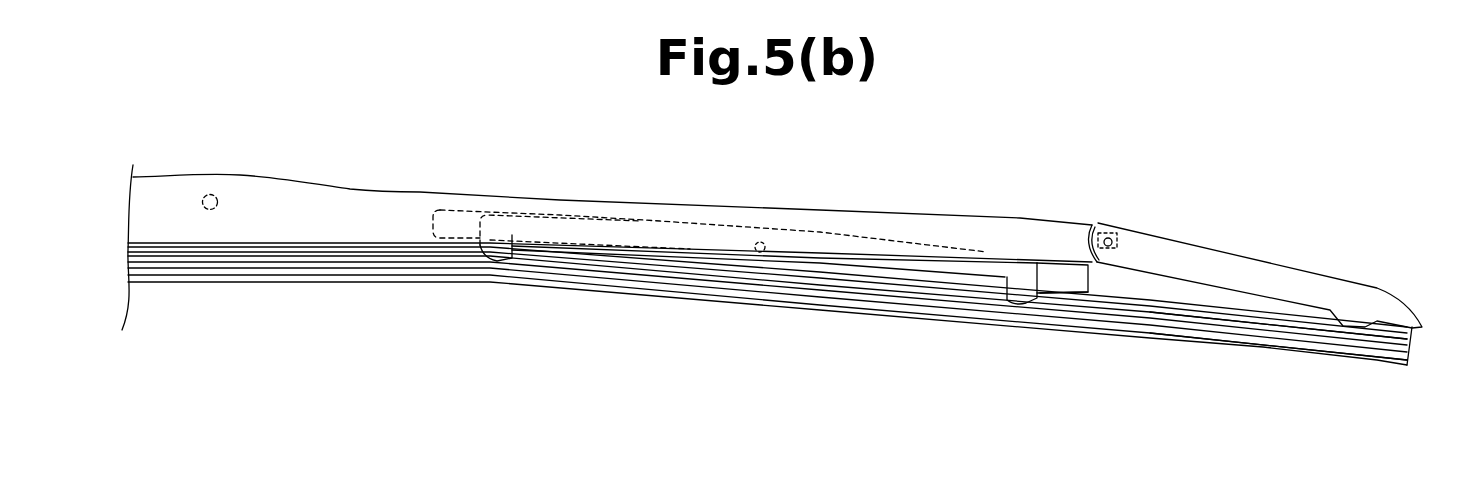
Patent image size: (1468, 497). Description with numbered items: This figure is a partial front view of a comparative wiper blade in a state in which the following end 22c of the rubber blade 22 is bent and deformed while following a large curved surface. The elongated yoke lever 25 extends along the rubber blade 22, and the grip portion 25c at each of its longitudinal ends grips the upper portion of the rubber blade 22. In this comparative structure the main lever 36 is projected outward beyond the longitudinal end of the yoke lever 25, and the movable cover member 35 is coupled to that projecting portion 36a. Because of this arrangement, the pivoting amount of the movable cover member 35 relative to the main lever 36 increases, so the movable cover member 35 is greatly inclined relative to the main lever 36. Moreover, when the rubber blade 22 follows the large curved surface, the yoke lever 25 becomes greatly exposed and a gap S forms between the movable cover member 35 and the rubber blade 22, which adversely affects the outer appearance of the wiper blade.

The rubber blade 22 is at (300, 283).
The following end 22c is at (1267, 333).
The yoke lever 25 is at (660, 222).
The grip portion 25c is at (497, 262).
The movable cover member 35 is at (1262, 258).
The main lever 36 is at (560, 197).
The projecting portion 36a is at (1124, 235).
The gap S is at (1155, 297).